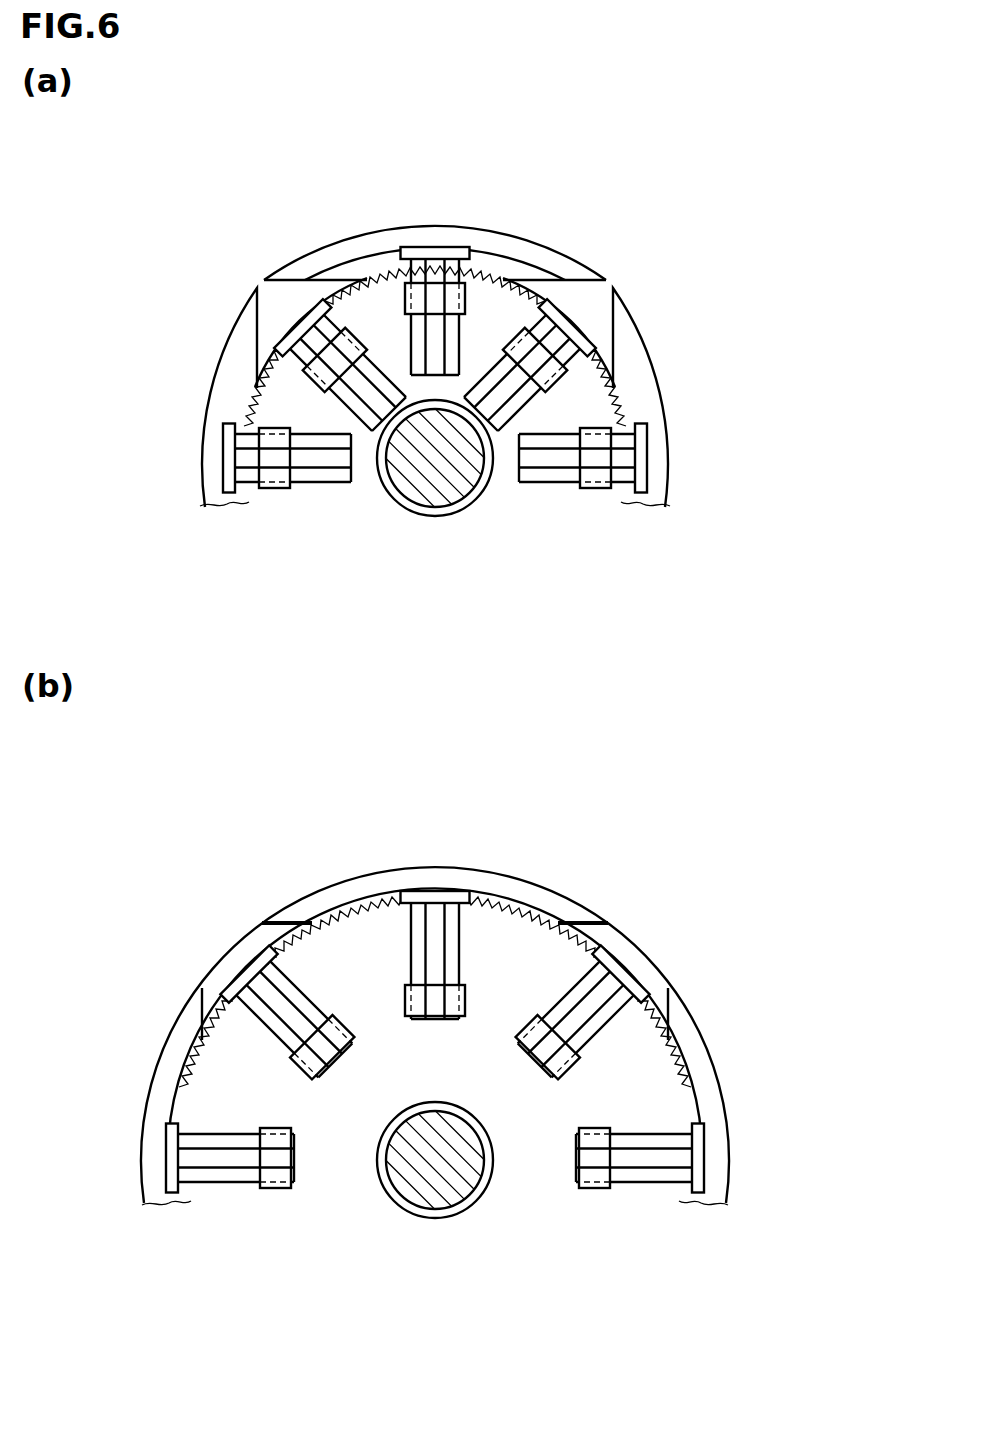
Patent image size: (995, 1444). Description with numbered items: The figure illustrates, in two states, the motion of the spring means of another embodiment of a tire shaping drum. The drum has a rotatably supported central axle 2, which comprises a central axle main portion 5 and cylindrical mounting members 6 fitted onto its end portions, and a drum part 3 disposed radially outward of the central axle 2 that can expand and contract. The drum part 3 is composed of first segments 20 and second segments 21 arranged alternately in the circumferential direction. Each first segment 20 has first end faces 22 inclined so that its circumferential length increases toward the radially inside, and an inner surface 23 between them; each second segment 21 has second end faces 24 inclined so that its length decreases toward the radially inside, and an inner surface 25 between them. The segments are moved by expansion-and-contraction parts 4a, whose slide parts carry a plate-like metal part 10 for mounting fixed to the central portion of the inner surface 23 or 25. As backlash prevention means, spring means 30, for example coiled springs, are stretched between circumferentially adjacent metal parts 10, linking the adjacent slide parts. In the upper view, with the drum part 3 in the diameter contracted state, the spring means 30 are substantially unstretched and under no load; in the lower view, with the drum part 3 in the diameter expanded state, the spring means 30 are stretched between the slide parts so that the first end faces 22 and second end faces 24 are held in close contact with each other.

The central axle 2 is at (435, 862).
The drum part 3 is at (350, 162).
The expansion-and-contraction part 4a is at (324, 488).
The central axle main portion 5 is at (428, 482).
The cylindrical mounting member 6 is at (447, 506).
The metal part for mounting 10 is at (434, 707).
The first segment 20 is at (620, 300).
The second segment 21 is at (347, 248).
The first end face 22 is at (240, 352).
The inner surface 23 is at (588, 278).
The second end face 24 is at (276, 330).
The inner surface 25 is at (530, 293).
The spring means 30 is at (372, 262).